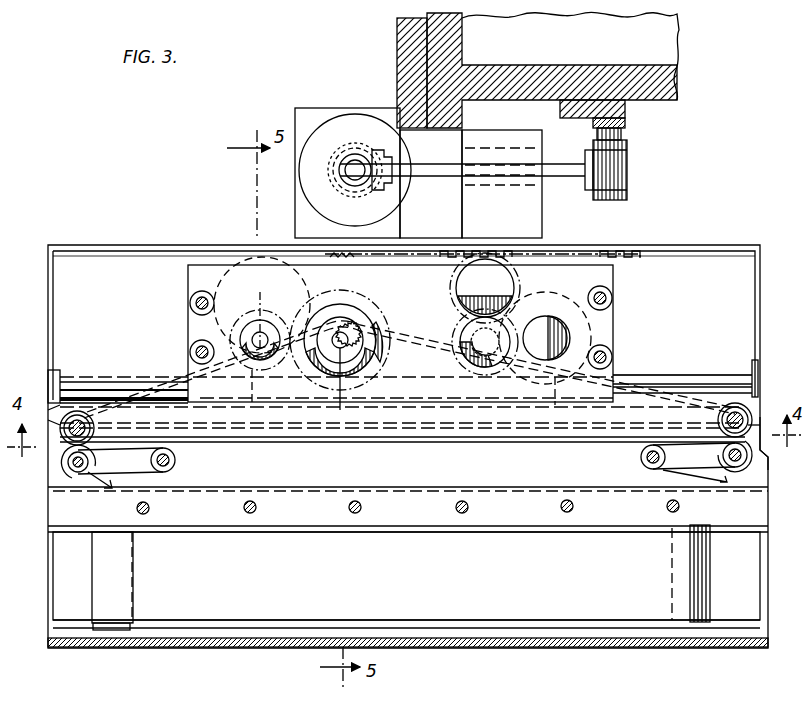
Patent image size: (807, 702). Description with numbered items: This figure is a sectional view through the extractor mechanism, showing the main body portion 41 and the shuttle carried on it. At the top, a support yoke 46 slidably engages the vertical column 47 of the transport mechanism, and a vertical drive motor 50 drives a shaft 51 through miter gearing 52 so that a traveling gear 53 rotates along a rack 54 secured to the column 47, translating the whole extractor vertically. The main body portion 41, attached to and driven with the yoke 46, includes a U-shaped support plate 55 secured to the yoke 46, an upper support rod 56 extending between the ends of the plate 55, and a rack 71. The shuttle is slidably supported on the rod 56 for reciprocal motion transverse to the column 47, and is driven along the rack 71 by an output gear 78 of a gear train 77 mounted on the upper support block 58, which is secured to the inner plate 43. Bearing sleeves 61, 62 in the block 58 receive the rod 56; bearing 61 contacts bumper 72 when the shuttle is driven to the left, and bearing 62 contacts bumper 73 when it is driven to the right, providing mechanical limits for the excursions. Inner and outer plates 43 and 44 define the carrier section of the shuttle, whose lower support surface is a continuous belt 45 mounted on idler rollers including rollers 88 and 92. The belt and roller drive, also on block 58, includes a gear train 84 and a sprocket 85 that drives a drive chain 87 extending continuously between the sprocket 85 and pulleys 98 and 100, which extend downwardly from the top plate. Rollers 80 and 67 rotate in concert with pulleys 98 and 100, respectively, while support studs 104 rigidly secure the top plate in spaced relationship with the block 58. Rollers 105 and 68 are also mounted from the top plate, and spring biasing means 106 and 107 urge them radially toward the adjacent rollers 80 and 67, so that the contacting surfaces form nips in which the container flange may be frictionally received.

The main body portion 41 is at (150, 240).
The inner plate 43 is at (435, 428).
The outer plate 44 is at (278, 643).
The continuous belt 45 is at (398, 592).
The support yoke 46 is at (397, 32).
The vertical column 47 is at (516, 72).
The vertical drive motor 50 is at (372, 218).
The shaft 51 is at (580, 178).
The miter gearing 52 is at (371, 150).
The traveling gear 53 is at (627, 190).
The rack 54 is at (625, 115).
The U-shaped support plate 55 is at (85, 247).
The upper support rod 56 is at (106, 396).
The upper support block 58 is at (530, 420).
The bearing sleeve 61 is at (213, 380).
The bearing sleeve 62 is at (617, 377).
The roller 67 is at (755, 427).
The roller 68 is at (768, 463).
The rack 71 is at (640, 260).
The bumper 72 is at (62, 378).
The bumper 73 is at (757, 360).
The gear train 77 is at (485, 312).
The output gear 78 is at (492, 270).
The roller 80 is at (84, 390).
The gear train 84 is at (313, 377).
The sprocket 85 is at (370, 377).
The drive chain 87 is at (452, 344).
The idler roller 88 is at (135, 590).
The idler roller 92 is at (710, 585).
The pulley 98 is at (63, 437).
The pulley 100 is at (737, 405).
The support stud 104 is at (190, 303).
The roller 105 is at (67, 469).
The spring biasing means 106 is at (175, 467).
The spring biasing means 107 is at (642, 461).